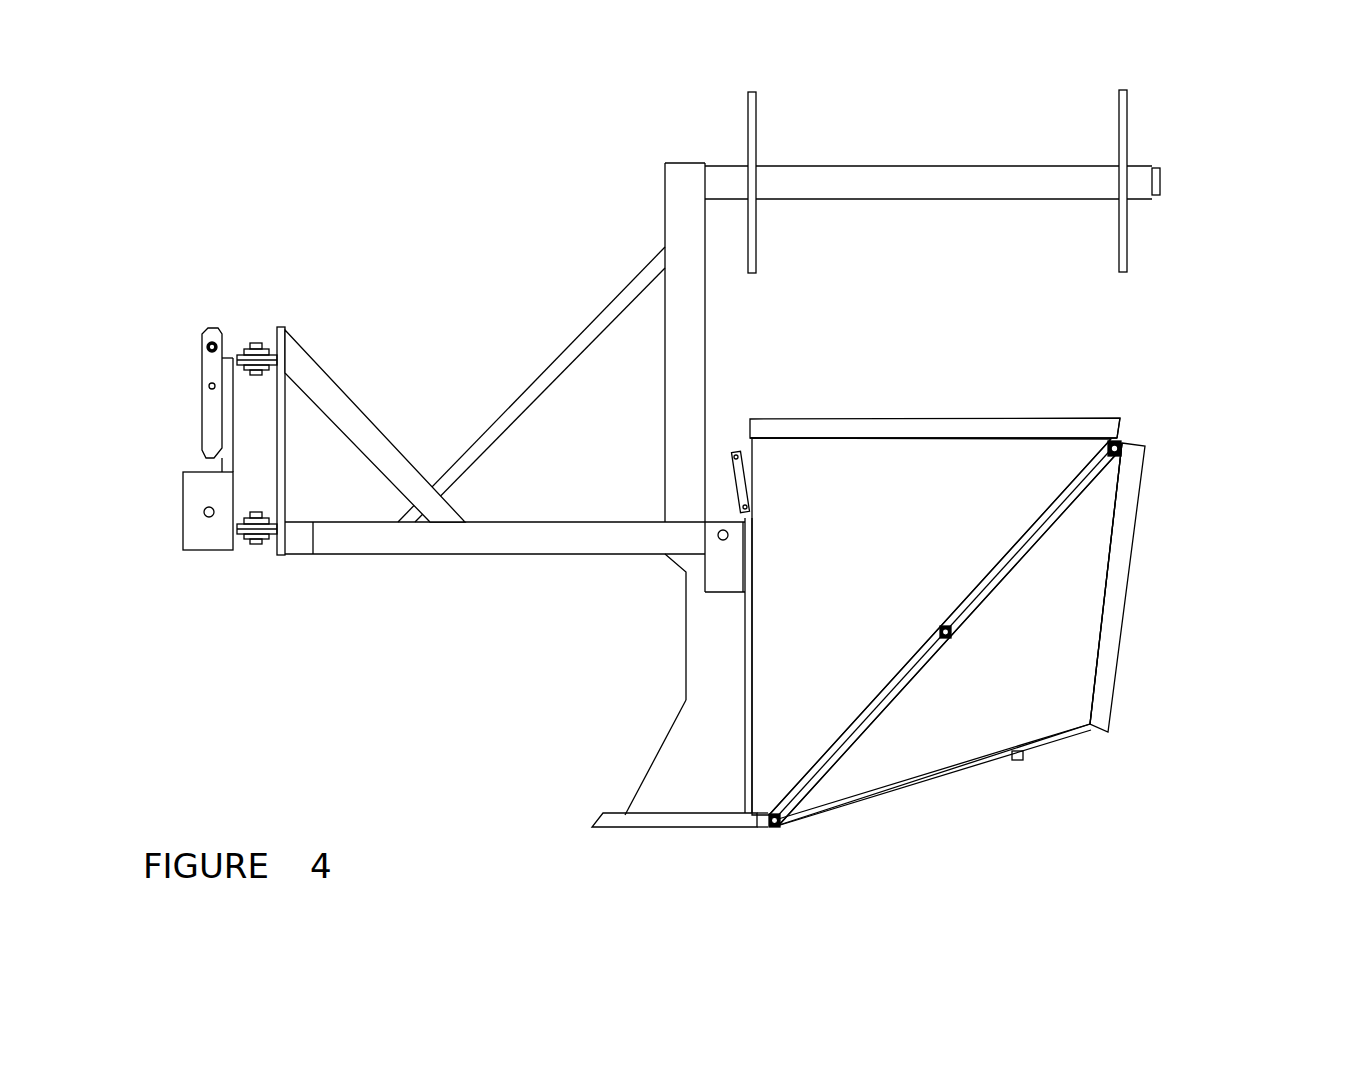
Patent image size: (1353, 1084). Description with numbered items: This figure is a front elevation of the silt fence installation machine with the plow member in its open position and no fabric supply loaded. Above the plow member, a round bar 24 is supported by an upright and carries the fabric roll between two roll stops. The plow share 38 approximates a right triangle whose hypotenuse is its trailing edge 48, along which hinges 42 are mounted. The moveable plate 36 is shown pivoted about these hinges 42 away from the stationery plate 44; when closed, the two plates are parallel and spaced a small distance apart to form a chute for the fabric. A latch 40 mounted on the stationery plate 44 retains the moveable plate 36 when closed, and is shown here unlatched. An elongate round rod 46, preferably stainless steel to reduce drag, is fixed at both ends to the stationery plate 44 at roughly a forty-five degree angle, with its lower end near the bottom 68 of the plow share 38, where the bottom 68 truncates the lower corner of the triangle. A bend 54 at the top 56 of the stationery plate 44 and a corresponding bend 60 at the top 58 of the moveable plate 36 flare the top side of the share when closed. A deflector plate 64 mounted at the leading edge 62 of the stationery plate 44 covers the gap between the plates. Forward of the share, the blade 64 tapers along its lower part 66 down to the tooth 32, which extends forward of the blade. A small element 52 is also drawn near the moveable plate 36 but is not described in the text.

The bar 24 is at (932, 179).
The tooth 32 is at (623, 795).
The moveable plate 36 is at (1037, 676).
The plow share 38 is at (935, 387).
The latch 40 is at (667, 463).
The hinges 42 is at (1006, 655).
The stationery plate 44 is at (903, 569).
The rod 46 is at (945, 631).
The trailing edge 48 is at (933, 790).
The latch tab 52 is at (1079, 781).
The bend 54 is at (1183, 396).
The top 56 is at (933, 391).
The top 58 is at (1162, 583).
The bend 60 is at (1161, 587).
The leading edge 62 is at (667, 665).
The deflector plate 64 is at (632, 627).
The lower part 66 is at (614, 755).
The bottom 68 is at (716, 866).